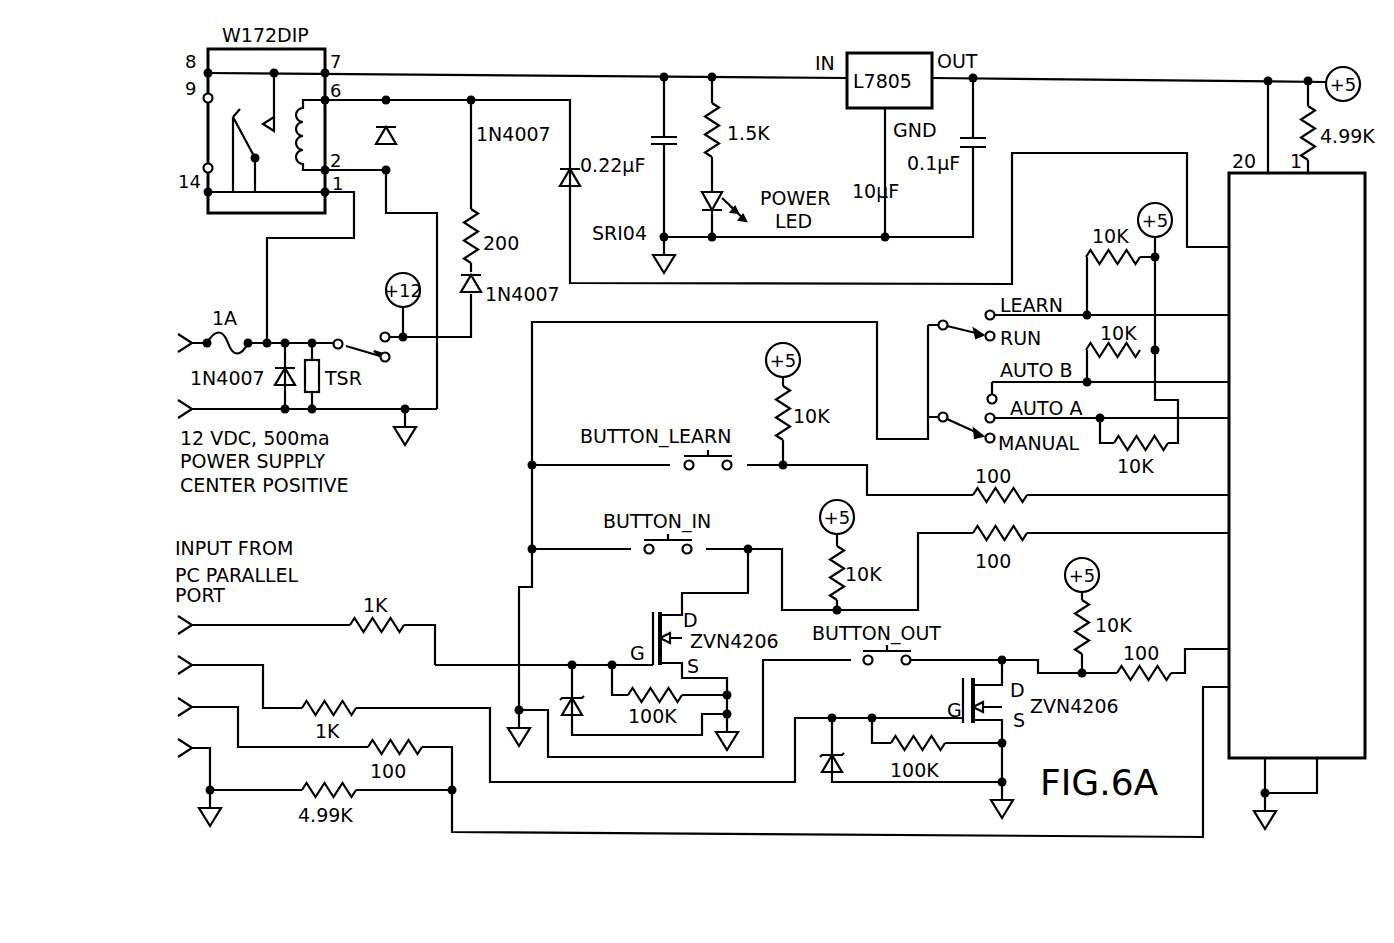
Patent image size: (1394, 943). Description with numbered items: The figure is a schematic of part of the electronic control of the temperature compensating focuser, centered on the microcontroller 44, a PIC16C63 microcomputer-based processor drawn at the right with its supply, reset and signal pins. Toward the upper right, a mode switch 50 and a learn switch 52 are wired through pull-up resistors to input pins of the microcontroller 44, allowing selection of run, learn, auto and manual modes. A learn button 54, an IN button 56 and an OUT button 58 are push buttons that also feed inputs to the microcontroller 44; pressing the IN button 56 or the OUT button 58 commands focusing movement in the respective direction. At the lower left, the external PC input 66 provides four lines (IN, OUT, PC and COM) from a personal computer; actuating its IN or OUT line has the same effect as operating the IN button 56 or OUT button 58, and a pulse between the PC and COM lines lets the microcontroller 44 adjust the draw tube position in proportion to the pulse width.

The microcontroller 44 is at (1228, 198).
The mode switch 50 is at (950, 412).
The learn switch 52 is at (947, 320).
The learn button 54 is at (718, 462).
The IN button 56 is at (670, 553).
The OUT button 58 is at (888, 664).
The external PC input 66 is at (250, 658).